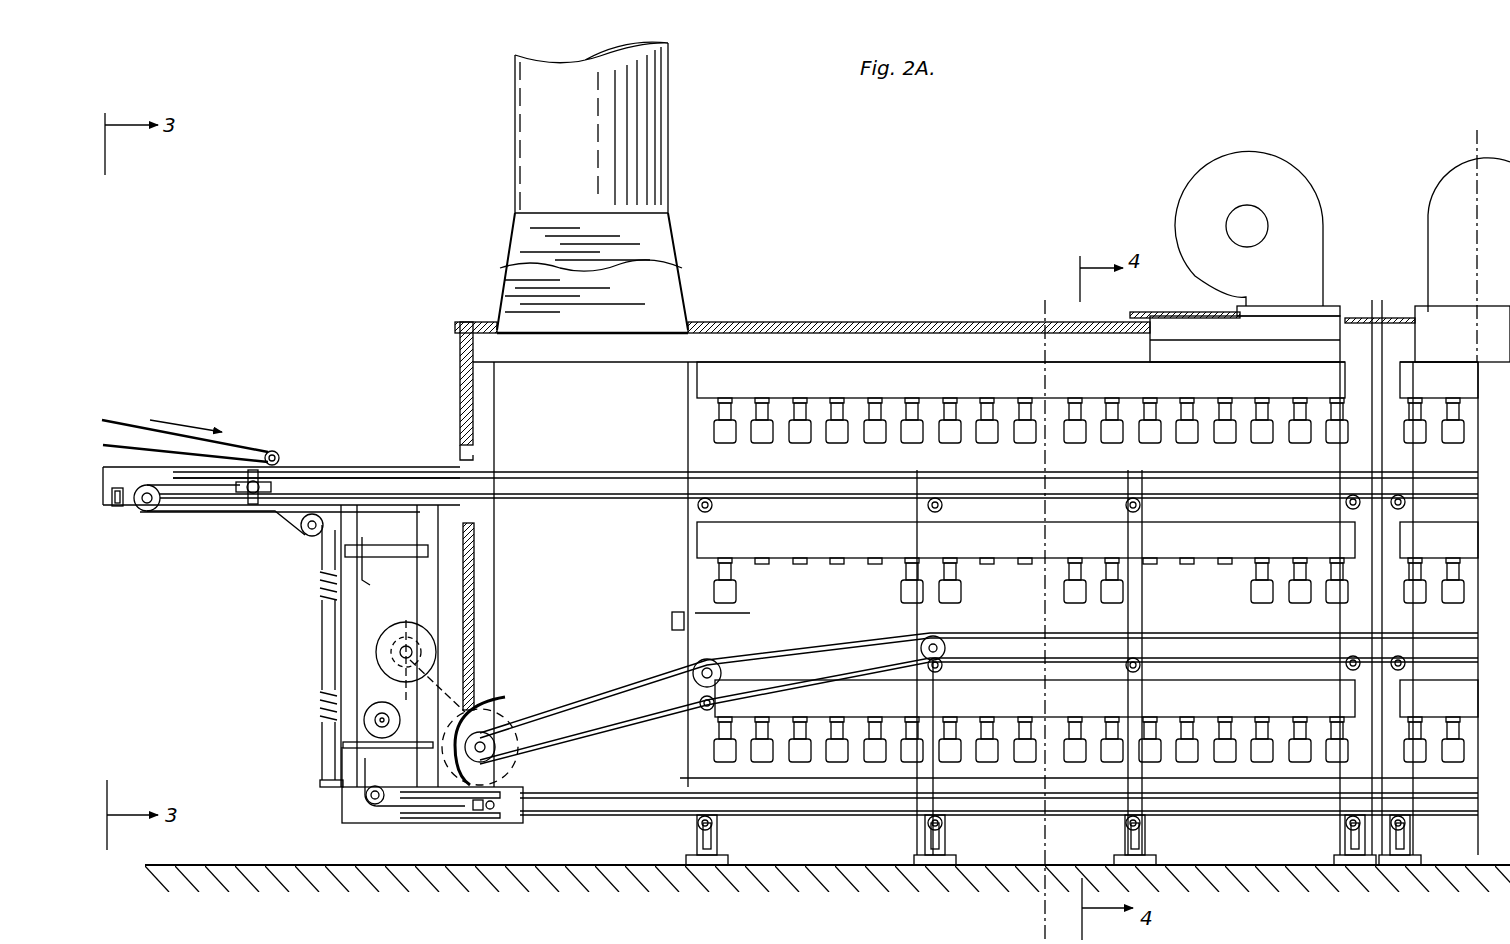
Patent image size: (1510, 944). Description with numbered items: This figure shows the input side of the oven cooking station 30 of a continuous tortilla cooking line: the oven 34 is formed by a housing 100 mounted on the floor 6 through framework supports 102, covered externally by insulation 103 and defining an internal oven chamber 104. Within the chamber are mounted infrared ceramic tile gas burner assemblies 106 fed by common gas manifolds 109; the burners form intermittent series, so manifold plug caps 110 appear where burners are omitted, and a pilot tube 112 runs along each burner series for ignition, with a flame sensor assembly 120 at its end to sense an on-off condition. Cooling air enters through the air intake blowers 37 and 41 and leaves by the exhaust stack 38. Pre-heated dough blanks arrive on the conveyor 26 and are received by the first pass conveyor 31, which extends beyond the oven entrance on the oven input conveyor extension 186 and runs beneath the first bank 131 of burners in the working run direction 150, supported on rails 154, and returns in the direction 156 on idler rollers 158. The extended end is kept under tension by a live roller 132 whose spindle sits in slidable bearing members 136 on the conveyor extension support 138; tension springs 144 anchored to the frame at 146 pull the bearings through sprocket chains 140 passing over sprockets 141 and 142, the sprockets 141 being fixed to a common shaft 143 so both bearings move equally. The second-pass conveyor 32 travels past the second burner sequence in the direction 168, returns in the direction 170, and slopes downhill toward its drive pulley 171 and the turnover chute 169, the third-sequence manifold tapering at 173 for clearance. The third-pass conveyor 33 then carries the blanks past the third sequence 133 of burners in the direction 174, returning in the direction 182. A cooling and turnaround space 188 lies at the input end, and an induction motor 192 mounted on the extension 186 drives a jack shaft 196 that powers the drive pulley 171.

The floor 6 is at (575, 865).
The conveyor 26 is at (268, 438).
The oven cooking station 30 is at (953, 222).
The first pass conveyor 31 is at (528, 470).
The second-pass conveyor 32 is at (1432, 625).
The third-pass conveyor 33 is at (1290, 798).
The oven 34 is at (458, 366).
The air intake blower 37 is at (1272, 172).
The exhaust stack 38 is at (670, 132).
The air intake blower 41 is at (1440, 175).
The housing 100 is at (838, 322).
The framework supports 102 is at (1167, 448).
The insulation 103 is at (476, 575).
The oven chamber 104 is at (838, 614).
The infrared ceramic tile gas burner assemblies 106 is at (862, 445).
The gas manifold 109 is at (972, 366).
The manifold plug caps 110 is at (878, 563).
The pilot tube 112 is at (735, 615).
The flame sensor assembly 120 is at (672, 620).
The first bank of radiant burners 131 is at (698, 413).
The live roller 132 is at (262, 480).
The third sequence of burners 133 is at (705, 762).
The bearing members 136 is at (250, 503).
The conveyor extension support 138 is at (118, 508).
The sprocket chains 140 is at (272, 512).
The sprockets 141 is at (310, 538).
The sprockets 142 is at (150, 512).
The shaft 143 is at (376, 788).
The tension springs 144 is at (288, 655).
The frame anchor 146 is at (368, 548).
The working run direction arrow 150 is at (648, 462).
The rails 154 is at (778, 480).
The return run direction arrow 156 is at (650, 520).
The idler rollers 158 is at (712, 503).
The working run direction arrow 168 is at (640, 655).
The turnover chute 169 is at (500, 700).
The return run direction arrow 170 is at (660, 728).
The drive pulley 171 is at (520, 740).
The taper 173 is at (805, 692).
The working run direction arrow 174 is at (690, 786).
The return run direction arrow 182 is at (1245, 817).
The oven input conveyor extension 186 is at (400, 460).
The cooling and turnaround space 188 is at (590, 596).
The induction motor 192 is at (370, 722).
The jack shaft 196 is at (405, 648).